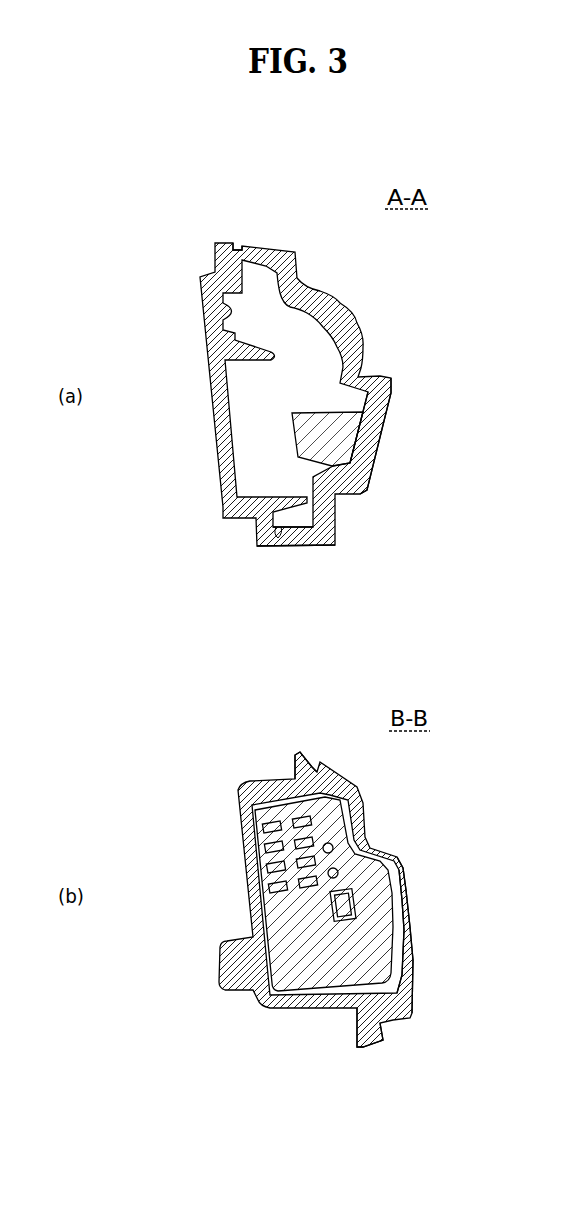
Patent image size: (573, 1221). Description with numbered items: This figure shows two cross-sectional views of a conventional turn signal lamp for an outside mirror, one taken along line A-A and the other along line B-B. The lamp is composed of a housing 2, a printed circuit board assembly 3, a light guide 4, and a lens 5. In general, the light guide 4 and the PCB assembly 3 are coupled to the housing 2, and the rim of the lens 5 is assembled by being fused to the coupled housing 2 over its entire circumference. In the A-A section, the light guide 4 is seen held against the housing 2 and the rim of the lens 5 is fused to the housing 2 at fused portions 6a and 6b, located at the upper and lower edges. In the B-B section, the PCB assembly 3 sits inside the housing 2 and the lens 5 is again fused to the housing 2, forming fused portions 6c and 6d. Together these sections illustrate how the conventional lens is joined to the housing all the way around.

The housing 2 is at (213, 422).
The printed circuit board (PCB) assembly 3 is at (348, 853).
The light guide 4 is at (350, 428).
The lens 5 is at (370, 457).
The fused portion 6a is at (241, 245).
The fused portion 6b is at (278, 542).
The fused portion 6c is at (313, 768).
The fused portion 6d is at (383, 1027).